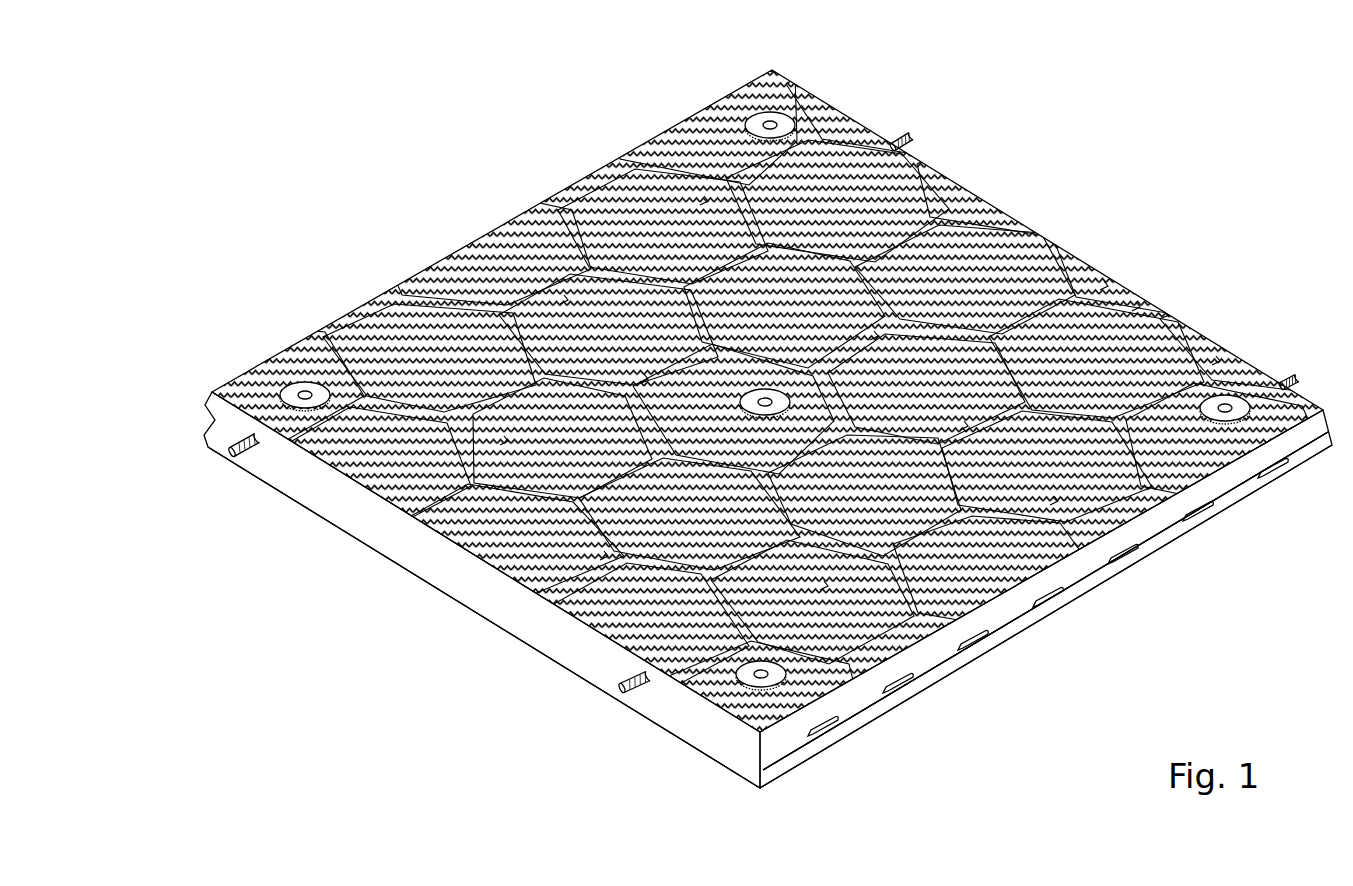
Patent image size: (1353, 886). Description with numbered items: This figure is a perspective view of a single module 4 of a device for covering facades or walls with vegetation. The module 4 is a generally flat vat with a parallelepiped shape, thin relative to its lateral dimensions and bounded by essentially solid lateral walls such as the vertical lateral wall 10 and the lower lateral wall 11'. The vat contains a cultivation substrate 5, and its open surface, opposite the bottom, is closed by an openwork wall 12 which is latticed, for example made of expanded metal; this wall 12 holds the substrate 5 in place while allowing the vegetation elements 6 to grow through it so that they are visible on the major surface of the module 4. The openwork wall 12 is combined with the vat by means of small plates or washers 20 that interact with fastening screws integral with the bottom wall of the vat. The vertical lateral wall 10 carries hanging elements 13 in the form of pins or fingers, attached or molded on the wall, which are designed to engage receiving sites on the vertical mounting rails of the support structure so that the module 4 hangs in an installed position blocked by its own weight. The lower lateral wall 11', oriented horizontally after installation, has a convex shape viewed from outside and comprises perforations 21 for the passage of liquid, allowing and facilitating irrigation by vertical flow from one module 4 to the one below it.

The module 4 is at (734, 834).
The cultivation substrate 5 is at (1022, 240).
The vegetation elements 6 is at (1217, 362).
The lateral wall 10 is at (488, 590).
The lower lateral wall 11' is at (1046, 610).
The openwork wall 12 is at (853, 667).
The hanging elements 13 is at (905, 138).
The washers 20 is at (783, 120).
The perforations 21 is at (1123, 558).